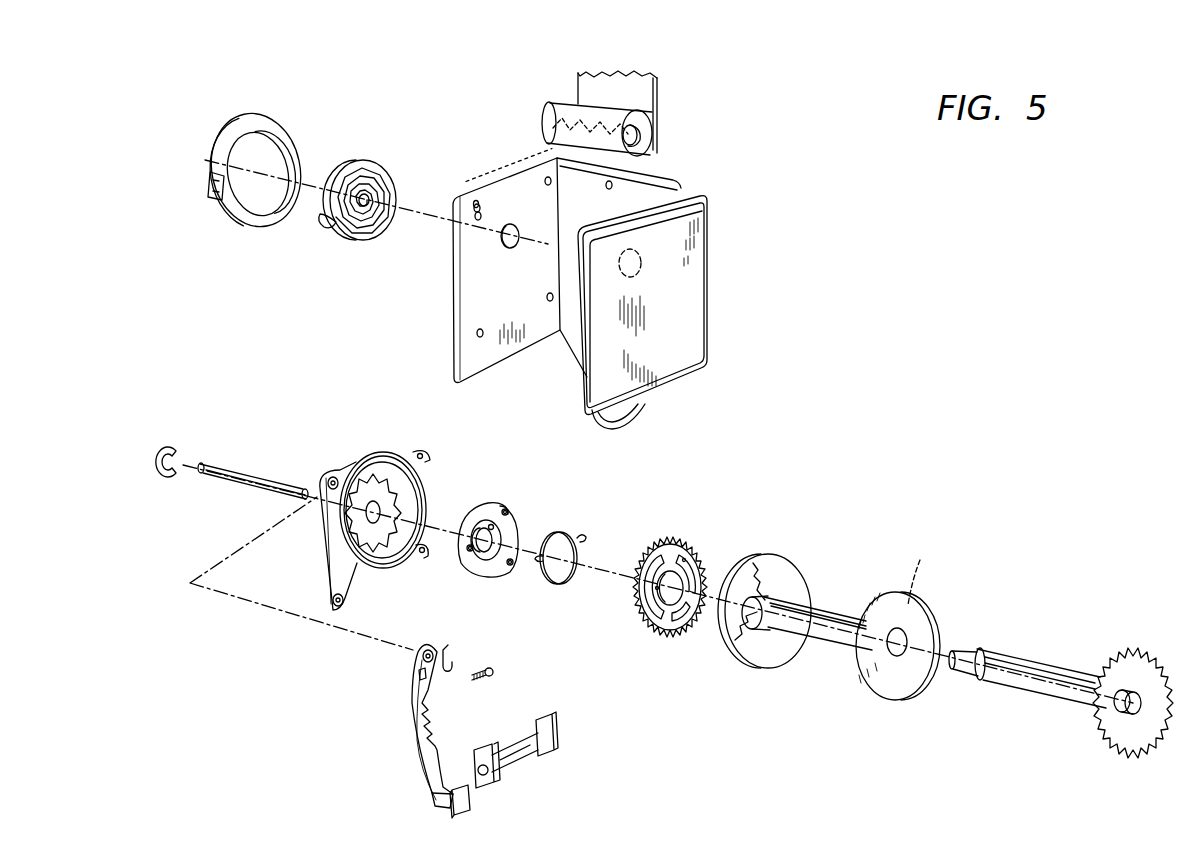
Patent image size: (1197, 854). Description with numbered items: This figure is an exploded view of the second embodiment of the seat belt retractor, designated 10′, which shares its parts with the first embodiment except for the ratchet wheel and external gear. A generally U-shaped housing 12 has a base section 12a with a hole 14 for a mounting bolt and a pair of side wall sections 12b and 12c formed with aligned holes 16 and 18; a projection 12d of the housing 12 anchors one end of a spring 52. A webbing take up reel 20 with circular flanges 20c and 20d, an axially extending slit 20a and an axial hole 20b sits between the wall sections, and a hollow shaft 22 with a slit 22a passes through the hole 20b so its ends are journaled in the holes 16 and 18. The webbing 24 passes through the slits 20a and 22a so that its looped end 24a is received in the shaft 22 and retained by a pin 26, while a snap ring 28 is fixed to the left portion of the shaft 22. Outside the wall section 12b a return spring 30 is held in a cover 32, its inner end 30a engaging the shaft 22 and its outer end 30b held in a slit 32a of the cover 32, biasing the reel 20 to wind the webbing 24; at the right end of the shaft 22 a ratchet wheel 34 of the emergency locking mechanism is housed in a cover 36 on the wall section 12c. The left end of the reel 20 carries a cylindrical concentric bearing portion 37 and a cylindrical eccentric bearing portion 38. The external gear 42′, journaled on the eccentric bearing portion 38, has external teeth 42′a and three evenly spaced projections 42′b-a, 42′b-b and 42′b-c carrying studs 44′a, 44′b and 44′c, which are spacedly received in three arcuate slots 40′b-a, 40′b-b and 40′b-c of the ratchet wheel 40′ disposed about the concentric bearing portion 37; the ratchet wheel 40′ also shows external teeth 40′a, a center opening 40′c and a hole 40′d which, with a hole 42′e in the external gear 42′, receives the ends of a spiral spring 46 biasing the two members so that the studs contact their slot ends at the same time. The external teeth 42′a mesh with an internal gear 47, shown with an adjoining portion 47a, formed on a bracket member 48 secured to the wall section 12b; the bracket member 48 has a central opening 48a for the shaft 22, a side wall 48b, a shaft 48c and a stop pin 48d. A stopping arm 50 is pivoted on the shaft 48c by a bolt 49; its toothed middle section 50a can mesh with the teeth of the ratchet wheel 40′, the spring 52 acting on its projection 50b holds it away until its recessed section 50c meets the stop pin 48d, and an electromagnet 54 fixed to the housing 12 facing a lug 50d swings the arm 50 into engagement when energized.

The seat belt retractor 10′ is at (838, 179).
The housing 12 is at (576, 292).
The base section 12a is at (709, 169).
The side wall section 12b is at (470, 356).
The side wall section 12c is at (590, 385).
The projection 12d is at (477, 200).
The hole 14 is at (630, 424).
The hole 16 is at (514, 247).
The hole 18 is at (640, 276).
The webbing take up reel 20 is at (851, 606).
The axially extending slit 20a is at (830, 640).
The axial hole 20b is at (905, 640).
The circular flange 20c is at (880, 548).
The circular flange 20d is at (945, 561).
The hollow shaft 22 is at (1027, 673).
The axially extending slit 22a is at (1062, 682).
The webbing 24 is at (640, 93).
The looped end 24a is at (640, 131).
The pin 26 is at (252, 470).
The snap ring 28 is at (170, 478).
The return spring 30 is at (372, 166).
The inner end 30a is at (370, 208).
The outer end 30b is at (326, 230).
The cover 32 is at (262, 124).
The slit 32a is at (222, 204).
The ratchet wheel 34 is at (1140, 652).
The cover 36 is at (700, 306).
The cylindrical concentric bearing portion 37 is at (800, 592).
The cylindrical eccentric bearing portion 38 is at (745, 567).
The ratchet wheel 40′ is at (678, 586).
The gear bore 40′a is at (668, 640).
The arcuate slot 40′b-a is at (640, 592).
The arcuate slot 40′b-b is at (690, 603).
The arcuate slot 40′b-c is at (681, 556).
The gear arcuate slot 40′c is at (686, 580).
The gear arcuate slot 40′d is at (660, 560).
The external gear 42′ is at (525, 533).
The external teeth 42′a is at (506, 506).
The projection 42′b-a is at (467, 550).
The projection 42′b-b is at (541, 611).
The projection 42′b-c is at (508, 513).
The hub hole 42′e is at (494, 524).
The stud 44′a is at (470, 553).
The stud 44′b is at (513, 566).
The stud 44′c is at (509, 513).
The spiral spring 46 is at (562, 584).
The internal gear 47 is at (355, 520).
The ratchet recess 47a is at (483, 488).
The bracket member 48 is at (387, 508).
The central opening 48a is at (400, 453).
The side wall 48b is at (477, 455).
The shaft 48c is at (334, 478).
The stop pin 48d is at (398, 625).
The bolt 49 is at (493, 672).
The stopping arm 50 is at (449, 735).
The toothed middle section 50a is at (490, 733).
The projection 50b is at (418, 680).
The recessed section 50c is at (432, 800).
The lug 50d is at (470, 803).
The spring 52 is at (452, 660).
The electromagnet 54 is at (530, 760).